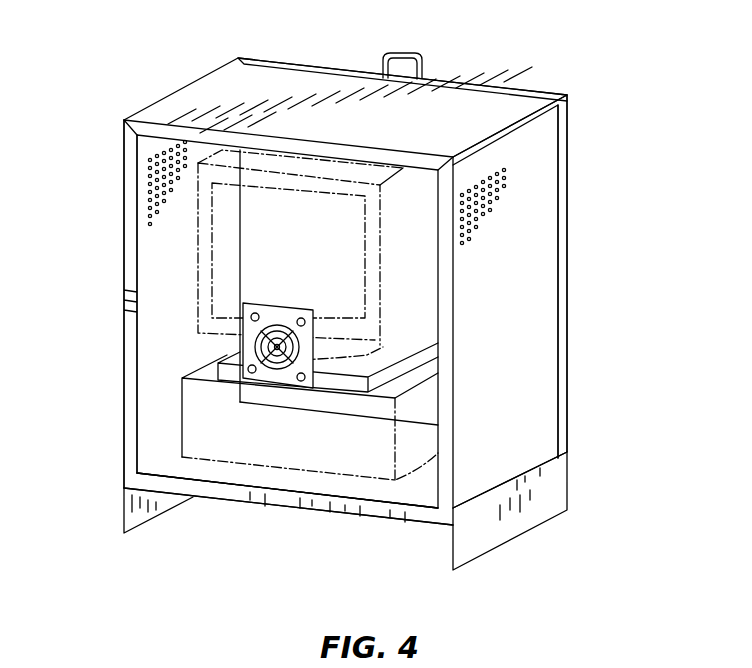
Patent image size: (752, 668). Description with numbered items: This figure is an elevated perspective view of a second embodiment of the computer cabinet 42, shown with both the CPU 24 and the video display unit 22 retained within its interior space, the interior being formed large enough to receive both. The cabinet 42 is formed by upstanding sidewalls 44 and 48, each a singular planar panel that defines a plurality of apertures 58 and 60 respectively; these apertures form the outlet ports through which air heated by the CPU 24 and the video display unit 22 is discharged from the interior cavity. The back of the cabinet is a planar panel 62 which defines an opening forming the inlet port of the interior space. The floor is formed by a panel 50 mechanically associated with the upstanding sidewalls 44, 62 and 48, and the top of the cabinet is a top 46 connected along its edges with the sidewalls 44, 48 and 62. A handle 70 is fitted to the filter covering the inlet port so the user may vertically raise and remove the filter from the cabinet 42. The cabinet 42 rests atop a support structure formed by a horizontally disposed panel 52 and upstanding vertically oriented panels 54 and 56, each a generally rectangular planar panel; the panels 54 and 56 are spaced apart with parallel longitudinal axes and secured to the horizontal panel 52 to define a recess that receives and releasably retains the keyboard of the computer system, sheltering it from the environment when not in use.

The video display unit 22 is at (230, 267).
The CPU 24 is at (247, 432).
The cabinet 42 is at (568, 348).
The upstanding sidewall 44 is at (523, 410).
The top 46 is at (362, 124).
The upstanding sidewall 48 is at (165, 238).
The floor panel 50 is at (408, 482).
The horizontally disposed panel 52 is at (297, 500).
The upstanding vertically oriented panel 54 is at (485, 532).
The upstanding vertically oriented panel 56 is at (155, 507).
The apertures 58 is at (488, 222).
The apertures 60 is at (152, 184).
The planar panel 62 is at (540, 90).
The handle 70 is at (420, 58).